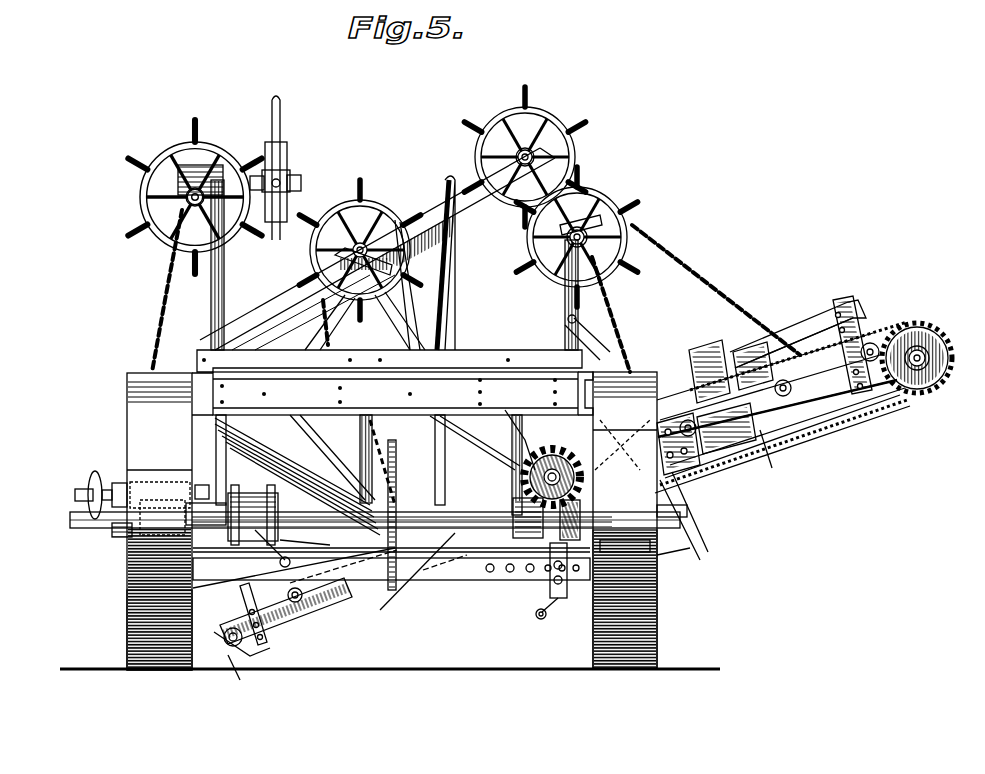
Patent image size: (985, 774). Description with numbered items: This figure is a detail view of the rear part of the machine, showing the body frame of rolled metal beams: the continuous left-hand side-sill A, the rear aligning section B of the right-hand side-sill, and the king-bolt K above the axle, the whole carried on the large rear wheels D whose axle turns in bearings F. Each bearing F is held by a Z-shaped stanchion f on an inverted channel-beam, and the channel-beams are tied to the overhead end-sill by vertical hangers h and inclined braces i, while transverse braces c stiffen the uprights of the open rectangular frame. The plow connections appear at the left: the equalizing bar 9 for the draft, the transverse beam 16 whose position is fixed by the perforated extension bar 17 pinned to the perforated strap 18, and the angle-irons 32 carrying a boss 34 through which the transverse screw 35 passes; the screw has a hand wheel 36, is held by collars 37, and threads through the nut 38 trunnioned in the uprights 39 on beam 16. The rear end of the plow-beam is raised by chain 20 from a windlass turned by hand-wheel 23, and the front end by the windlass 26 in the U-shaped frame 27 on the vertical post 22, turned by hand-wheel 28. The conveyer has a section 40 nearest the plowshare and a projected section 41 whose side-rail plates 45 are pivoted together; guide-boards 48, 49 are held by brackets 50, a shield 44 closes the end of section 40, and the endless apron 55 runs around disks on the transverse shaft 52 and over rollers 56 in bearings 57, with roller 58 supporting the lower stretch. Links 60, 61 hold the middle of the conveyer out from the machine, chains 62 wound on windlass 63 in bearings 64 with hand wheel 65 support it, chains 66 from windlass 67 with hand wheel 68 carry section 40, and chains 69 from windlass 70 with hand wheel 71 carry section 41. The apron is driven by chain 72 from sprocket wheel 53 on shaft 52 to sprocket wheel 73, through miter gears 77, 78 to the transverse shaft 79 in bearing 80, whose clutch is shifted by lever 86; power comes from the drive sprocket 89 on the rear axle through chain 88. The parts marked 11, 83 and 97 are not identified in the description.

The side-sill A is at (200, 388).
The rear section of right hand side-sill B is at (625, 520).
The rear wheels D is at (127, 612).
The king-bolt K is at (395, 382).
The equalizing bar 9 is at (235, 518).
The arm 11 is at (677, 551).
The transverse beam 16 is at (476, 605).
The perforated extension bar 17 is at (292, 548).
The perforated strap 18 is at (546, 612).
The chain 20 is at (148, 338).
The vertical post 22 is at (212, 285).
The hand-wheel 23 is at (215, 160).
The windlass 26 is at (182, 160).
The U-shaped frame 27 is at (290, 180).
The hand-wheel 28 is at (285, 158).
The angle-irons 32 is at (118, 540).
The boss 34 is at (162, 494).
The transverse screw 35 is at (88, 476).
The hand wheel 36 is at (90, 480).
The collars 37 is at (140, 478).
The nut 38 is at (205, 478).
The uprights 39 is at (137, 524).
The conveyer section 40 is at (294, 596).
The projected section 41 is at (744, 408).
The shield 44 is at (250, 652).
The plates 45 is at (700, 486).
The guide-board 48 is at (236, 636).
The guide-board 49 is at (792, 325).
The brackets 50 is at (690, 372).
The transverse shaft 52 is at (925, 365).
The sprocket wheel 53 is at (905, 328).
The endless apron 55 is at (712, 352).
The rollers 56 is at (812, 375).
The bearings 57 is at (771, 449).
The roller 58 is at (222, 674).
The link 60 is at (603, 362).
The link 61 is at (625, 545).
The chains 62 is at (622, 368).
The windlass 63 is at (605, 228).
The bearings 64 is at (580, 228).
The hand wheel 65 is at (595, 222).
The chains 66 is at (322, 338).
The windlass 67 is at (360, 238).
The hand wheel 68 is at (380, 258).
The chains 69 is at (712, 290).
The windlass 70 is at (545, 150).
The hand wheel 71 is at (515, 115).
The chain 72 is at (830, 440).
The sprocket wheel 73 is at (535, 430).
The miter gear 77 is at (440, 416).
The miter gear 78 is at (622, 446).
The transverse shaft 79 is at (185, 198).
The bearing 80 is at (505, 530).
The chain 83 is at (372, 450).
The lever 86 is at (445, 304).
The chain 88 is at (392, 440).
The drive sprocket 89 is at (410, 587).
The bracket 97 is at (688, 510).
The transverse braces c is at (472, 348).
The Z-shaped stanchion f is at (417, 513).
The vertical hangers h is at (350, 440).
The inclined braces i is at (297, 476).
The bearings F is at (525, 570).